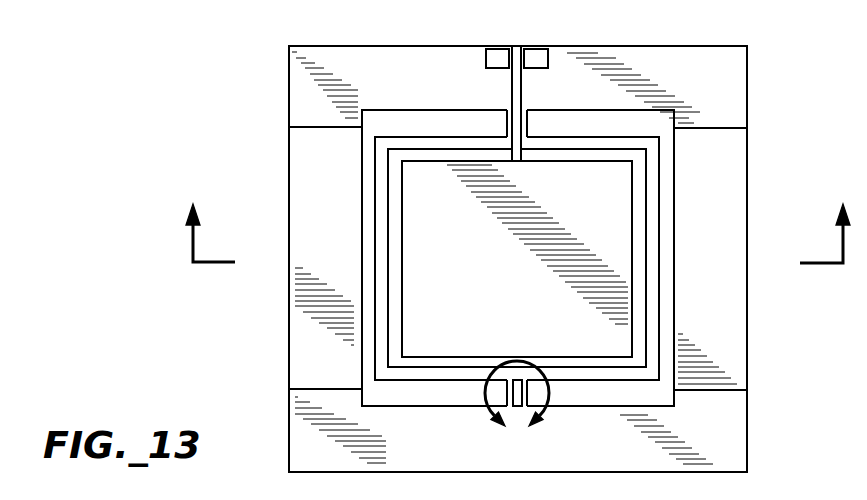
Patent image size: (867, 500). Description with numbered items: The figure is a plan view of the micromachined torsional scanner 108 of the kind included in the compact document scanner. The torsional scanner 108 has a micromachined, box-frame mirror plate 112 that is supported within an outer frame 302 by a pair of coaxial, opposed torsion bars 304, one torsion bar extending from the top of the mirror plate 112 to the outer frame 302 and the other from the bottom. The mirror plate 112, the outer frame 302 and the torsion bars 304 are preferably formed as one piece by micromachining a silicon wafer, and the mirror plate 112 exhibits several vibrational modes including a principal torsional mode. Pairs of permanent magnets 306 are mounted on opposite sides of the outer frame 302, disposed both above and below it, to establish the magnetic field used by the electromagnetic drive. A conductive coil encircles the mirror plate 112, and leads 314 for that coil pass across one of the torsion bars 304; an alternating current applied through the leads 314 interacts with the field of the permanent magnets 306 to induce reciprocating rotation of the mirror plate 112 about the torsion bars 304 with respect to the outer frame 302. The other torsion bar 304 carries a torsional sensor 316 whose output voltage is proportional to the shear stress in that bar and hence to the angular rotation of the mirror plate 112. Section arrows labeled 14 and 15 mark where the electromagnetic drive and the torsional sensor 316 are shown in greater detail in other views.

The torsional scanner 108 is at (748, 80).
The mirror plate 112 is at (532, 284).
The outer frame 302 is at (289, 95).
The torsion bars 304 is at (507, 128).
The permanent magnets 306 is at (289, 170).
The leads 314 is at (528, 52).
The torsional sensor 316 is at (529, 394).
The section line 14- 14 is at (519, 220).
The section line 15- 15 is at (518, 407).